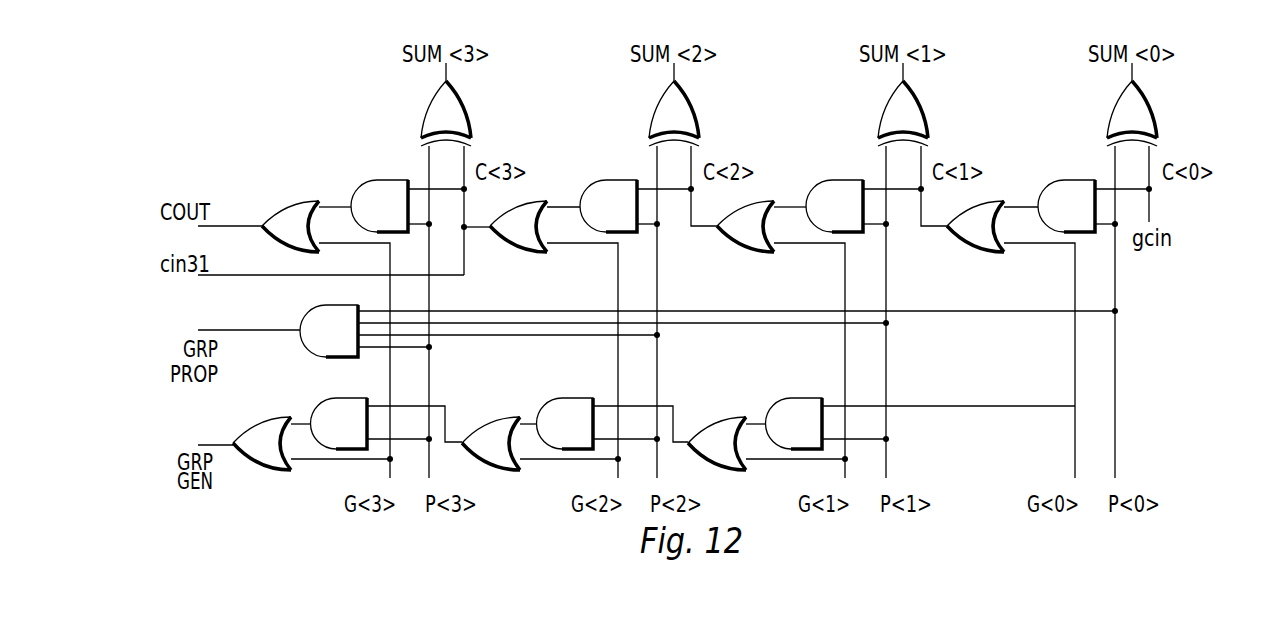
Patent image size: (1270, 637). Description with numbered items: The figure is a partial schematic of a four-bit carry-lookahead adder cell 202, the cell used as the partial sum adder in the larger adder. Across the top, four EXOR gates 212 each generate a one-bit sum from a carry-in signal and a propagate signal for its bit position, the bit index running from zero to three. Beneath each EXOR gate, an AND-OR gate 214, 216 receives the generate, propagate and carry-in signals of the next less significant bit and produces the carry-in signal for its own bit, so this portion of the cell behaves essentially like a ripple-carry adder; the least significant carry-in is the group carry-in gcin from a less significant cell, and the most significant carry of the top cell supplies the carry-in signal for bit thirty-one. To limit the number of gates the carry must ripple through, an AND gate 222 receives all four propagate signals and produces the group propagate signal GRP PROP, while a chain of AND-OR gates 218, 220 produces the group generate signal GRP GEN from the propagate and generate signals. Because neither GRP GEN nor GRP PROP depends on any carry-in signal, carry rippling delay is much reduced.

The carry-lookahead adder cell 202 is at (311, 123).
The EXOR gate 212 is at (462, 108).
The AND gate 214 is at (363, 194).
The OR gate 216 is at (287, 214).
The AND gate 218 is at (329, 406).
The OR gate 220 is at (262, 428).
The AND gate 222 is at (313, 325).